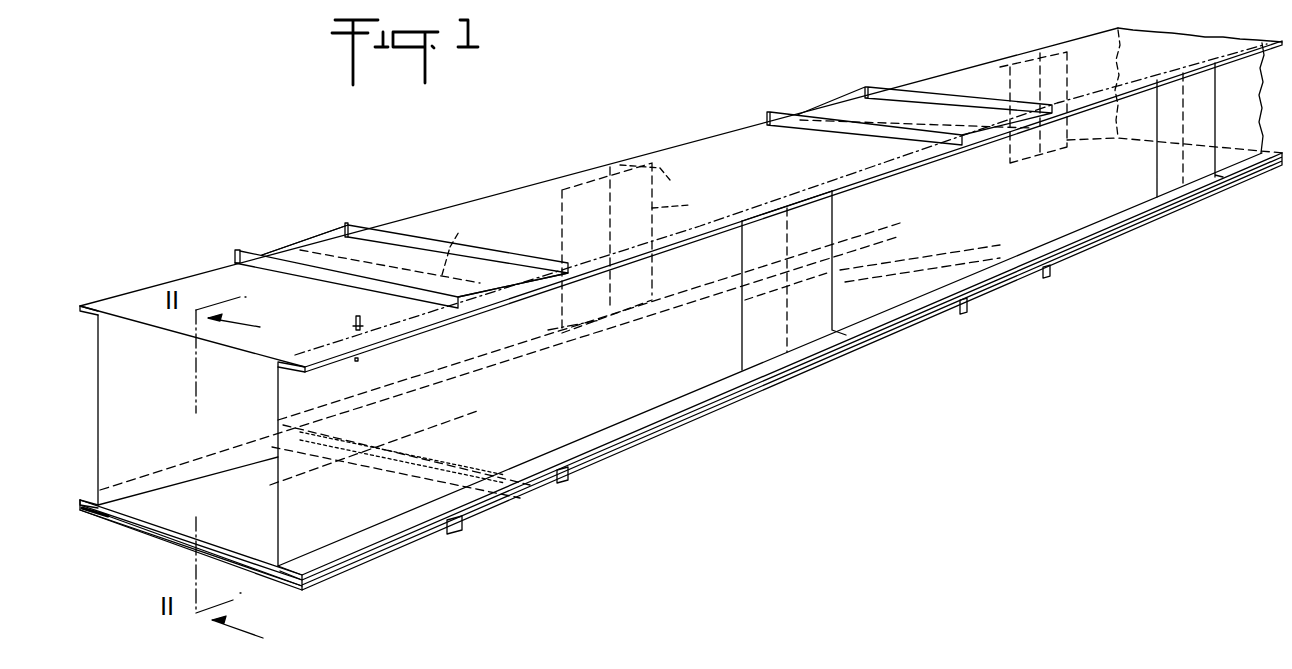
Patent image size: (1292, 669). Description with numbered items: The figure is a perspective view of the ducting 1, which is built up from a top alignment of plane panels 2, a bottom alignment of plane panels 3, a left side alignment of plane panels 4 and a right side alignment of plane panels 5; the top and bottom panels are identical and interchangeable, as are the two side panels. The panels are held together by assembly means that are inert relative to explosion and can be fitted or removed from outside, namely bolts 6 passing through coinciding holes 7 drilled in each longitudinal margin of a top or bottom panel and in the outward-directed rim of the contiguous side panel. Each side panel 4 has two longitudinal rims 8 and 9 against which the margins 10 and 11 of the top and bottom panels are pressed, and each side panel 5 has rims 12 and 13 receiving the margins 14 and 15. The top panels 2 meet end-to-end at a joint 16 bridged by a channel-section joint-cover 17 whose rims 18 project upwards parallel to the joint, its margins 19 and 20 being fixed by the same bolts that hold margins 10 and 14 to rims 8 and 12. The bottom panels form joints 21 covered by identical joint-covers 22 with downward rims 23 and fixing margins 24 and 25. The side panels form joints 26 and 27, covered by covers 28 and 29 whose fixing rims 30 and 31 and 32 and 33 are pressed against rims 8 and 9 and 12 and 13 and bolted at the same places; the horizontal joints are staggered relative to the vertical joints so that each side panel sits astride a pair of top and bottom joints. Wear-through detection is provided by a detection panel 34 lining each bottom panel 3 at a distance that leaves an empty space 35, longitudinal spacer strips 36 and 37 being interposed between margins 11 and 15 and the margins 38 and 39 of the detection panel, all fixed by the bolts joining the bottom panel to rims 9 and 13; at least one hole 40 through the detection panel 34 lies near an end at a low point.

The ducting 1 is at (527, 180).
The top plane panel 2 is at (306, 296).
The bottom plane panel 3 is at (258, 510).
The left side plane panel 4 is at (118, 398).
The right side plane panel 5 is at (677, 367).
The bolt 6 is at (356, 323).
The hole 7 is at (383, 332).
The longitudinal rim 8 is at (86, 316).
The longitudinal rim 9 is at (90, 497).
The margin 10 is at (84, 305).
The margin 11 is at (82, 506).
The longitudinal rim 12 is at (292, 367).
The longitudinal rim 13 is at (300, 567).
The margin 14 is at (297, 360).
The margin 15 is at (323, 578).
The joint 16 is at (455, 245).
The joint-cover 17 is at (405, 225).
The rim 18 is at (238, 250).
The margin 19 is at (330, 232).
The margin 20 is at (552, 288).
The joint 21 is at (405, 460).
The joint-cover 22 is at (535, 497).
The rim 23 is at (453, 537).
The fixing margin 24 is at (272, 432).
The fixing margin 25 is at (503, 513).
The joint 26 is at (655, 170).
The joint 27 is at (743, 328).
The cover 28 is at (660, 208).
The cover 29 is at (833, 305).
The fixing rim 30 is at (620, 165).
The fixing rim 31 is at (560, 340).
The fixing rim 32 is at (845, 195).
The fixing rim 33 is at (835, 338).
The detection panel 34 is at (222, 560).
The empty space 35 is at (150, 528).
The longitudinal spacer strip 36 is at (80, 508).
The longitudinal spacer strip 37 is at (312, 583).
The margin 38 is at (95, 520).
The margin 39 is at (293, 583).
The hole 40 is at (440, 435).